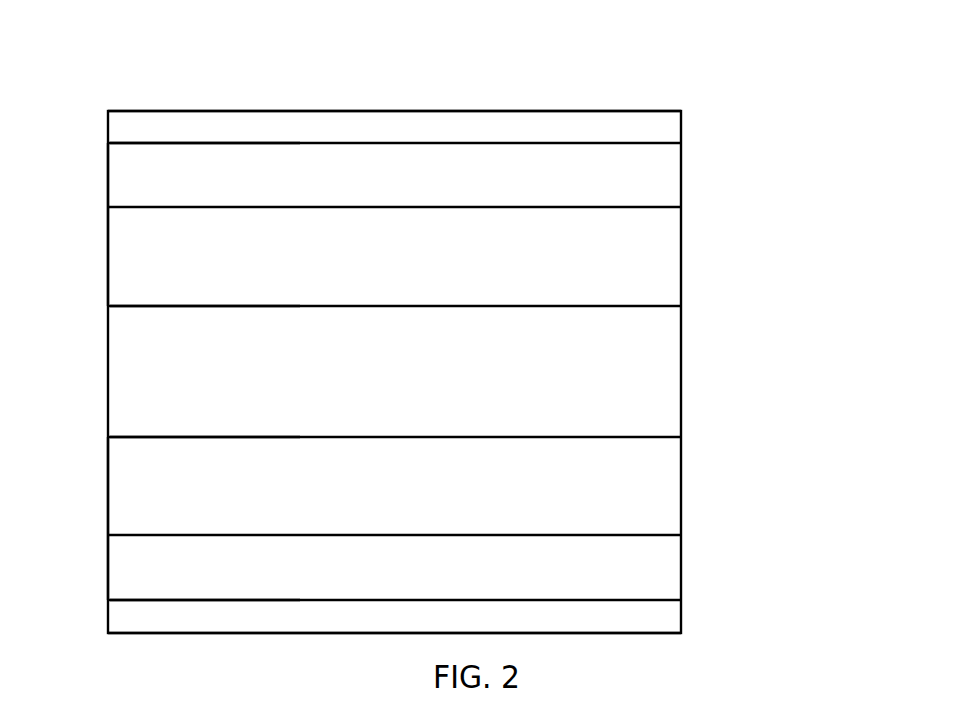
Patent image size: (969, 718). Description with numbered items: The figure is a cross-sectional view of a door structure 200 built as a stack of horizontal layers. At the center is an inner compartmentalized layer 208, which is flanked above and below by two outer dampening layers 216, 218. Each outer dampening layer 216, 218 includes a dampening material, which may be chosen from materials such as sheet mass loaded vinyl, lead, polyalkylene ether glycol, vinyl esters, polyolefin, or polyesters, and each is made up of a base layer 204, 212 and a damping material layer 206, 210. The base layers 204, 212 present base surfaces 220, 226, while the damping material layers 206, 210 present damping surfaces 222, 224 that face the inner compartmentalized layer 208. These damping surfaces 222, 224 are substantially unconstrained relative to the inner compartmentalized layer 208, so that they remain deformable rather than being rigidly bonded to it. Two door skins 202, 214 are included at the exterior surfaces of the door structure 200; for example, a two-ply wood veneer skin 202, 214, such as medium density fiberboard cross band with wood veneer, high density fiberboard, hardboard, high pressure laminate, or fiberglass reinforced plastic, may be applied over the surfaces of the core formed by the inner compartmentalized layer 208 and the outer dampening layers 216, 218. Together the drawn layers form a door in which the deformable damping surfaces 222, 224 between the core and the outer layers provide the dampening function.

The door structure 200 is at (437, 77).
The door skin 202 is at (681, 124).
The base layer 204 is at (681, 170).
The damping material layer 206 is at (681, 250).
The inner compartmentalized layer 208 is at (681, 368).
The damping material layer 210 is at (681, 480).
The base layer 212 is at (681, 560).
The door skin 214 is at (681, 610).
The outer dampening layer 216 is at (100, 139).
The outer dampening layer 218 is at (100, 437).
The base surface 220 is at (198, 140).
The damping surface 222 is at (180, 310).
The damping surface 224 is at (163, 435).
The base surface 226 is at (165, 600).